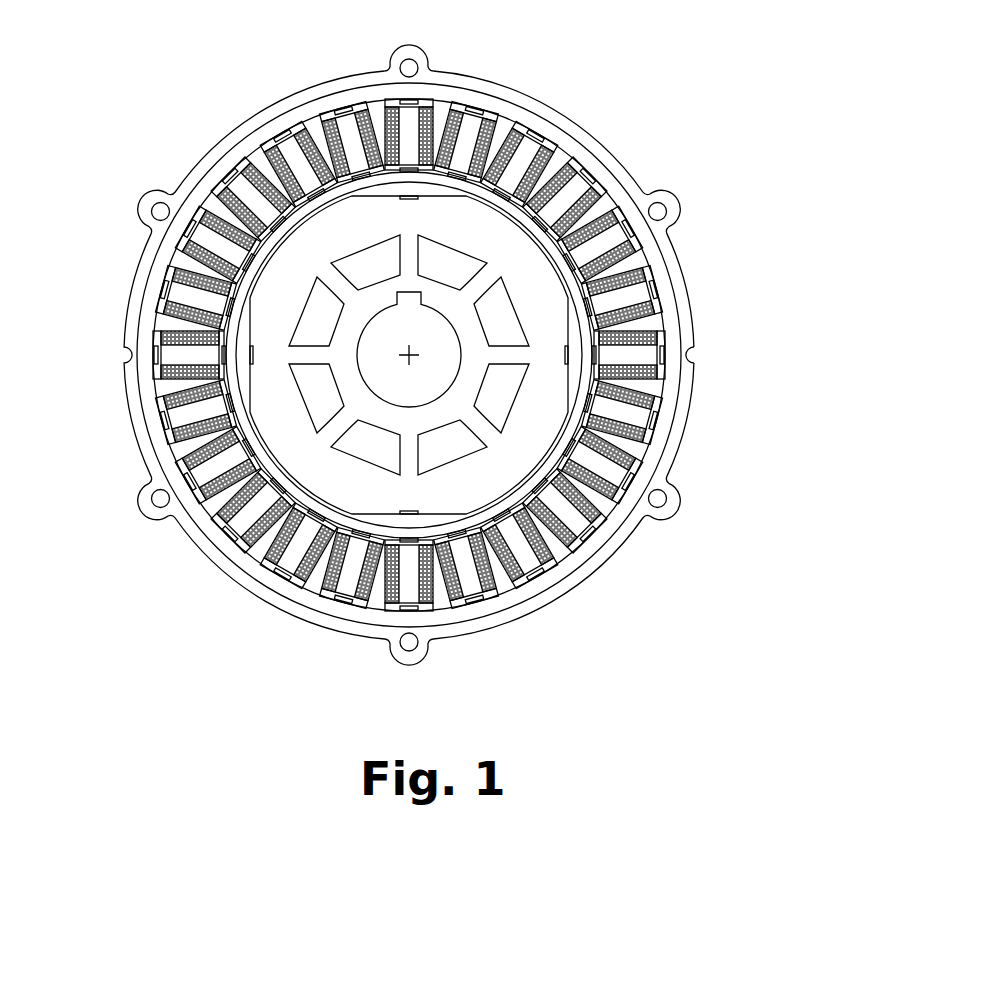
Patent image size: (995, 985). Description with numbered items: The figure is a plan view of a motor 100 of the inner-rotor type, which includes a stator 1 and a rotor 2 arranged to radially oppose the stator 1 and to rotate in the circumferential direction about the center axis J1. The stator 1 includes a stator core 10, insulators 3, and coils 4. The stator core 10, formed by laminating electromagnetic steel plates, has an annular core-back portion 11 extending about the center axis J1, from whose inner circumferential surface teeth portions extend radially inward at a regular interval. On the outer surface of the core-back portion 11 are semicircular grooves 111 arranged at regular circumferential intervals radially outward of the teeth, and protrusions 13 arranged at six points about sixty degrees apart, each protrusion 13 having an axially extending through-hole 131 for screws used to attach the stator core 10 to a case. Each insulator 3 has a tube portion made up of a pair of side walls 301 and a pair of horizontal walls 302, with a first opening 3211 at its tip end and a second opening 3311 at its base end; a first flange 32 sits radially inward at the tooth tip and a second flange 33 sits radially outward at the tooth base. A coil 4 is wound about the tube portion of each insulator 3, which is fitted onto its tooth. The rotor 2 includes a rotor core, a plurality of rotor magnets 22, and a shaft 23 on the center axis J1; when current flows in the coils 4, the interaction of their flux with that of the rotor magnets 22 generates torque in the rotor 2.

The motor 100 is at (72, 56).
The stator 1 is at (233, 133).
The rotor 2 is at (296, 258).
The insulator 3 is at (268, 143).
The coil 4 is at (313, 122).
The stator core 10 is at (592, 128).
The core-back portion 11 is at (493, 93).
The groove 111 is at (697, 353).
The protrusion 13 is at (420, 52).
The through-hole 131 is at (402, 62).
The rotor magnet 22 is at (301, 478).
The shaft 23 is at (356, 344).
The side wall 301 is at (522, 163).
The horizontal wall 302 is at (540, 143).
The first flange 32 is at (620, 340).
The second flange 33 is at (620, 262).
The first opening 3211 is at (620, 458).
The second opening 3311 is at (630, 402).
The center axis J1 is at (413, 360).